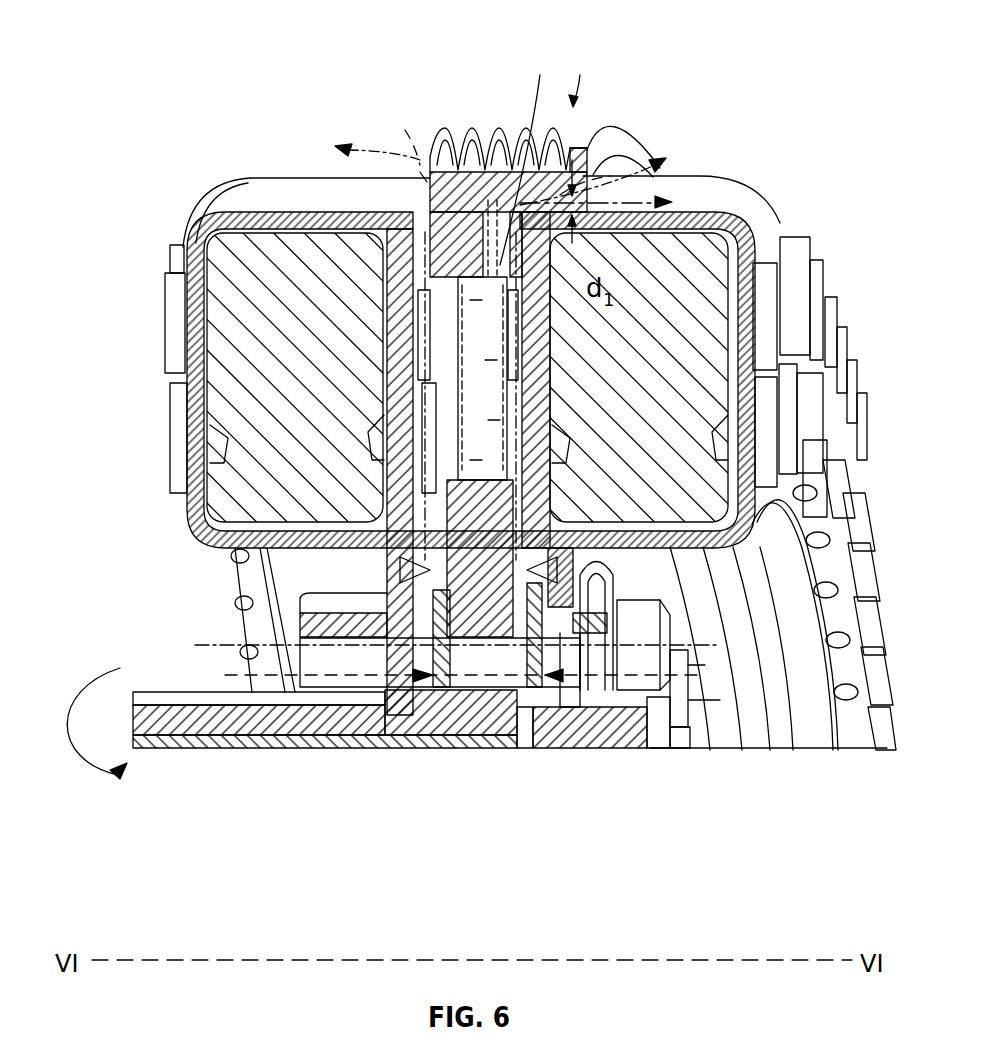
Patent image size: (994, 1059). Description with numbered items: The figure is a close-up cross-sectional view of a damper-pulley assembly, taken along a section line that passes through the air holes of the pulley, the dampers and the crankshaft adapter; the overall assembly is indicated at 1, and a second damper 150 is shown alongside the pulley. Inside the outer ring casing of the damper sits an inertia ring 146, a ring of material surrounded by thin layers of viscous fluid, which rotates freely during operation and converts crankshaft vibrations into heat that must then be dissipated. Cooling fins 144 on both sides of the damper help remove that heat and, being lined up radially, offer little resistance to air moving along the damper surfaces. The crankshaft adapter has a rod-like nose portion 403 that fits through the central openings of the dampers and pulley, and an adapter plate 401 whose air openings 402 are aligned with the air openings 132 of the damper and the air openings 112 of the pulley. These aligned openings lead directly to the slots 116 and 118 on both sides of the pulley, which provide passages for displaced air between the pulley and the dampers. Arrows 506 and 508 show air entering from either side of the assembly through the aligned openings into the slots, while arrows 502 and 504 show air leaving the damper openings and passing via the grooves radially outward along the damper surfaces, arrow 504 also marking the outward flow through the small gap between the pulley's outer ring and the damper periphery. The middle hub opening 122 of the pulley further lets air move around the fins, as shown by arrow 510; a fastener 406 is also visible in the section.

The rotary damper 1 is at (367, 85).
The second damper 150 is at (720, 128).
The air movement arrow 502 is at (356, 151).
The middle hub opening 122 is at (487, 328).
The cooling fins 144 is at (176, 250).
The inertia ring 146 is at (235, 268).
The air movement arrow 510 is at (611, 160).
The air movement arrow 504 is at (619, 192).
The crankshaft adapter plate 401 is at (318, 635).
The air movement arrow 508 is at (237, 675).
The nose portion 403 is at (215, 752).
The air openings 402 is at (300, 752).
The air openings 132 is at (440, 693).
The slot 116 is at (453, 690).
The slot 118 is at (605, 670).
The air openings 112 is at (497, 663).
The nut 406 is at (647, 680).
The air movement arrow 506 is at (690, 705).